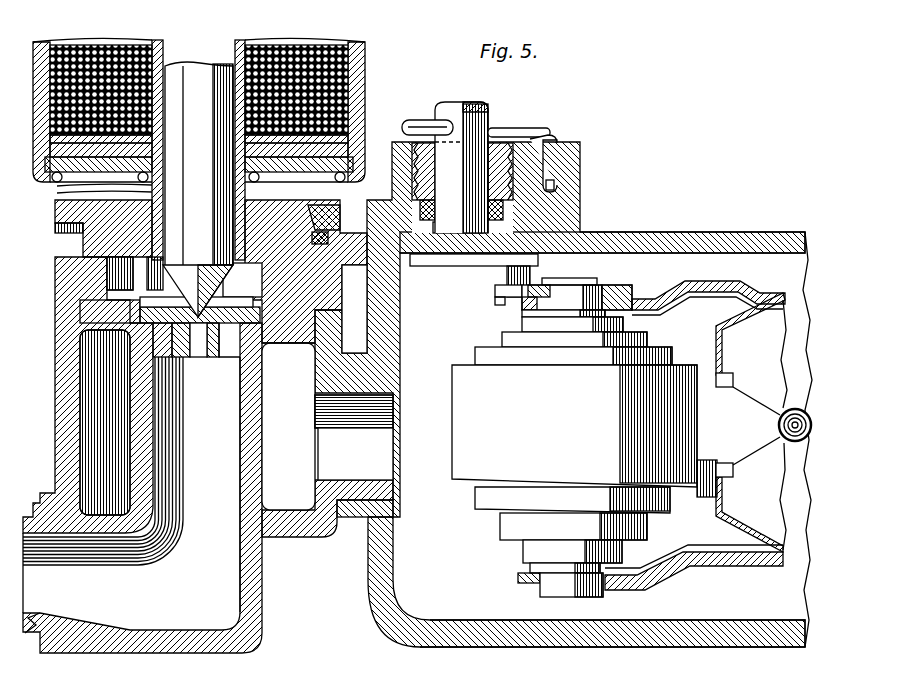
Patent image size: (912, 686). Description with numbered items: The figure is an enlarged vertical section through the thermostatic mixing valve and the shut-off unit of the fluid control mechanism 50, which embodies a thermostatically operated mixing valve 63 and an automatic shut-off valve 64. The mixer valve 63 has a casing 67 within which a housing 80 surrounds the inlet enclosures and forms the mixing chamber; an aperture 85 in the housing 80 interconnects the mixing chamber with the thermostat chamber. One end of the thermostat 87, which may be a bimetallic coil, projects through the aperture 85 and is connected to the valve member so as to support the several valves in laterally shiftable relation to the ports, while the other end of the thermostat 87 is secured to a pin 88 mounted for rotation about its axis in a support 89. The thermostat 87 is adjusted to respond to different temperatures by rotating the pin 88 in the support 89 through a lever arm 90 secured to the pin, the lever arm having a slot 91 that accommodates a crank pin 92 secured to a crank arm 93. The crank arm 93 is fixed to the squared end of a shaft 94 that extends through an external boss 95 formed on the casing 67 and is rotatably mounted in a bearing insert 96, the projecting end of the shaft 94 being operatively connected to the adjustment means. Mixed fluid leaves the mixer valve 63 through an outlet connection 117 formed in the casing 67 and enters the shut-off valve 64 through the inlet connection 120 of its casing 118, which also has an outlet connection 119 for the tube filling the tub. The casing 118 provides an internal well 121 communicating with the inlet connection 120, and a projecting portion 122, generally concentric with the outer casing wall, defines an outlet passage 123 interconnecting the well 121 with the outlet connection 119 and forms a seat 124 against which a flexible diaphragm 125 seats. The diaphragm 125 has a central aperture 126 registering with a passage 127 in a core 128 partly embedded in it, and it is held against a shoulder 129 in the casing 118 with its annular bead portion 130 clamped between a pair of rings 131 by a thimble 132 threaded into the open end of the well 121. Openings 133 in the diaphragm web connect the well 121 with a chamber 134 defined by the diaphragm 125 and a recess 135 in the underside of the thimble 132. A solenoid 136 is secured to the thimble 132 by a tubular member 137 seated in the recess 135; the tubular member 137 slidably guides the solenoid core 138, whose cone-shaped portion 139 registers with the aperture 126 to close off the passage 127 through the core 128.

The fluid control mechanism 50 is at (596, 218).
The thermostatically operated mixing valve 63 is at (717, 232).
The automatic shut-off valve 64 is at (280, 537).
The casing 67 is at (753, 633).
The housing 80 is at (733, 322).
The aperture 85 is at (730, 385).
The thermostat 87 is at (492, 488).
The pin 88 is at (553, 588).
The support 89 is at (720, 562).
The lever arm 90 is at (617, 286).
The slot 91 is at (497, 297).
The crank pin 92 is at (512, 278).
The crank arm 93 is at (450, 258).
The shaft 94 is at (465, 137).
The external boss 95 is at (583, 163).
The bearing insert 96 is at (543, 133).
The outlet connection 117 is at (367, 507).
The casing 118 is at (63, 462).
The outlet connection 119 is at (30, 632).
The inlet connection 120 is at (382, 442).
The well 121 is at (292, 477).
The projecting portion 122 is at (288, 376).
The outlet passage 123 is at (230, 477).
The seat 124 is at (288, 426).
The flexible diaphragm 125 is at (330, 335).
The aperture 126 is at (290, 265).
The passage 127 is at (200, 357).
The core 128 is at (190, 350).
The shoulder 129 is at (78, 327).
The annular bead portion 130 is at (85, 315).
The rings 131 is at (343, 300).
The thimble 132 is at (317, 213).
The openings 133 is at (75, 290).
The chamber 134 is at (312, 253).
The recess 135 is at (80, 256).
The solenoid 136 is at (358, 97).
The tubular member 137 is at (110, 186).
The core 138 is at (185, 207).
The cone-shaped portion 139 is at (190, 285).